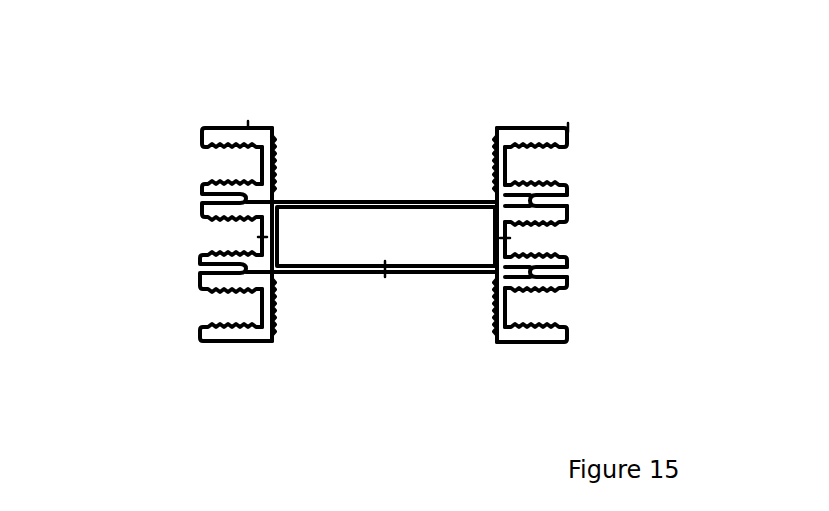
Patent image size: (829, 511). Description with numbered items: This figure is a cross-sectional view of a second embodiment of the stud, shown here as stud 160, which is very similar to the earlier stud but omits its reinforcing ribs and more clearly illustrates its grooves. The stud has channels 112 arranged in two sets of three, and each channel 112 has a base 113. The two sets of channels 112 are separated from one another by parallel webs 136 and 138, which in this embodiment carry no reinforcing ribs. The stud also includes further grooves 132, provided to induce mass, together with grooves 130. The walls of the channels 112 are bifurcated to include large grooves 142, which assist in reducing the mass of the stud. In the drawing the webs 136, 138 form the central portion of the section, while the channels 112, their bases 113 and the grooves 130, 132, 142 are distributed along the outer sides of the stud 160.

The extruded heat sink profile assembly 160 is at (392, 250).
The web 138 is at (423, 199).
The web 136 is at (437, 275).
The groove 132 is at (493, 158).
The groove 130 is at (543, 290).
The large groove 142 is at (545, 199).
The channel 112 is at (252, 237).
The base 113 is at (262, 305).